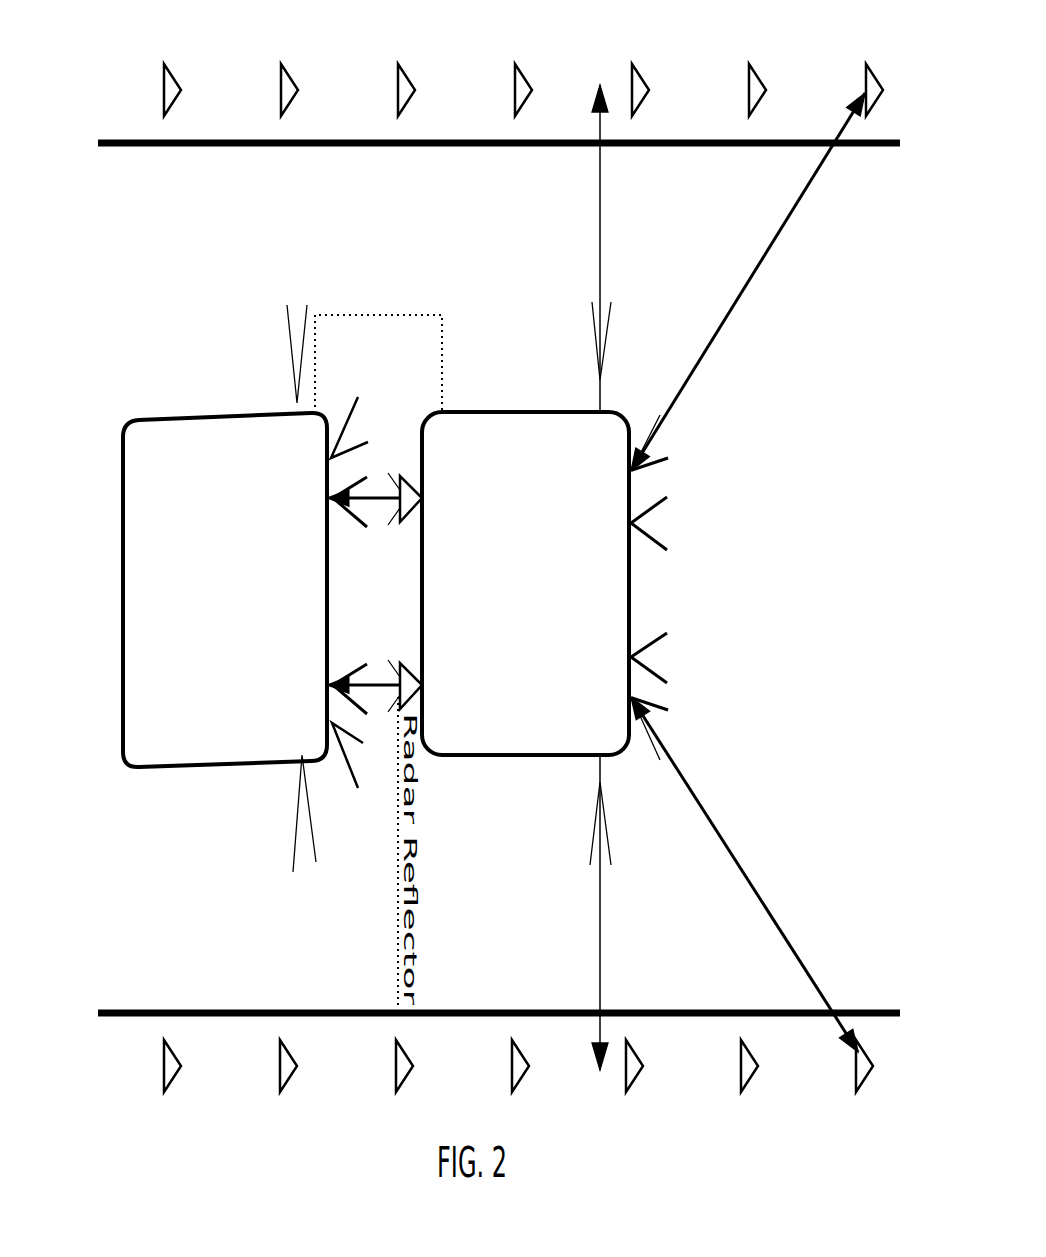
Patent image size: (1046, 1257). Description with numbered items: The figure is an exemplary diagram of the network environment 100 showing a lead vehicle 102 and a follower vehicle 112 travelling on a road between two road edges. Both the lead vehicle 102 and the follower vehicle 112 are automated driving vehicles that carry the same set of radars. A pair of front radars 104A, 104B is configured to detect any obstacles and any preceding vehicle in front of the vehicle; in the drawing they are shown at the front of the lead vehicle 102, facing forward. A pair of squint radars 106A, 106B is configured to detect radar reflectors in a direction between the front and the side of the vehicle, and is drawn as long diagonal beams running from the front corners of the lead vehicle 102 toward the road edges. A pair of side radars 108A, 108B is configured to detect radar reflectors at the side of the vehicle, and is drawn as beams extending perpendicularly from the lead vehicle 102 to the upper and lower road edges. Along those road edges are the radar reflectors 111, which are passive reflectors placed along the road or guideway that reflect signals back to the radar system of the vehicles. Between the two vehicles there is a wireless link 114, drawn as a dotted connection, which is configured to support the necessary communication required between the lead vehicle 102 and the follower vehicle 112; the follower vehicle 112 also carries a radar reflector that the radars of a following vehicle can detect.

The network environment 100 is at (55, 28).
The lead vehicle 102 is at (605, 586).
The front radar 104A is at (673, 526).
The front radar 104B is at (673, 658).
The squint radar 106A is at (748, 282).
The squint radar 106B is at (744, 874).
The side radar 108A is at (620, 247).
The side radar 108B is at (619, 912).
The radar reflectors 111 is at (523, 560).
The follower vehicle 112 is at (305, 587).
The wireless link 114 is at (381, 332).